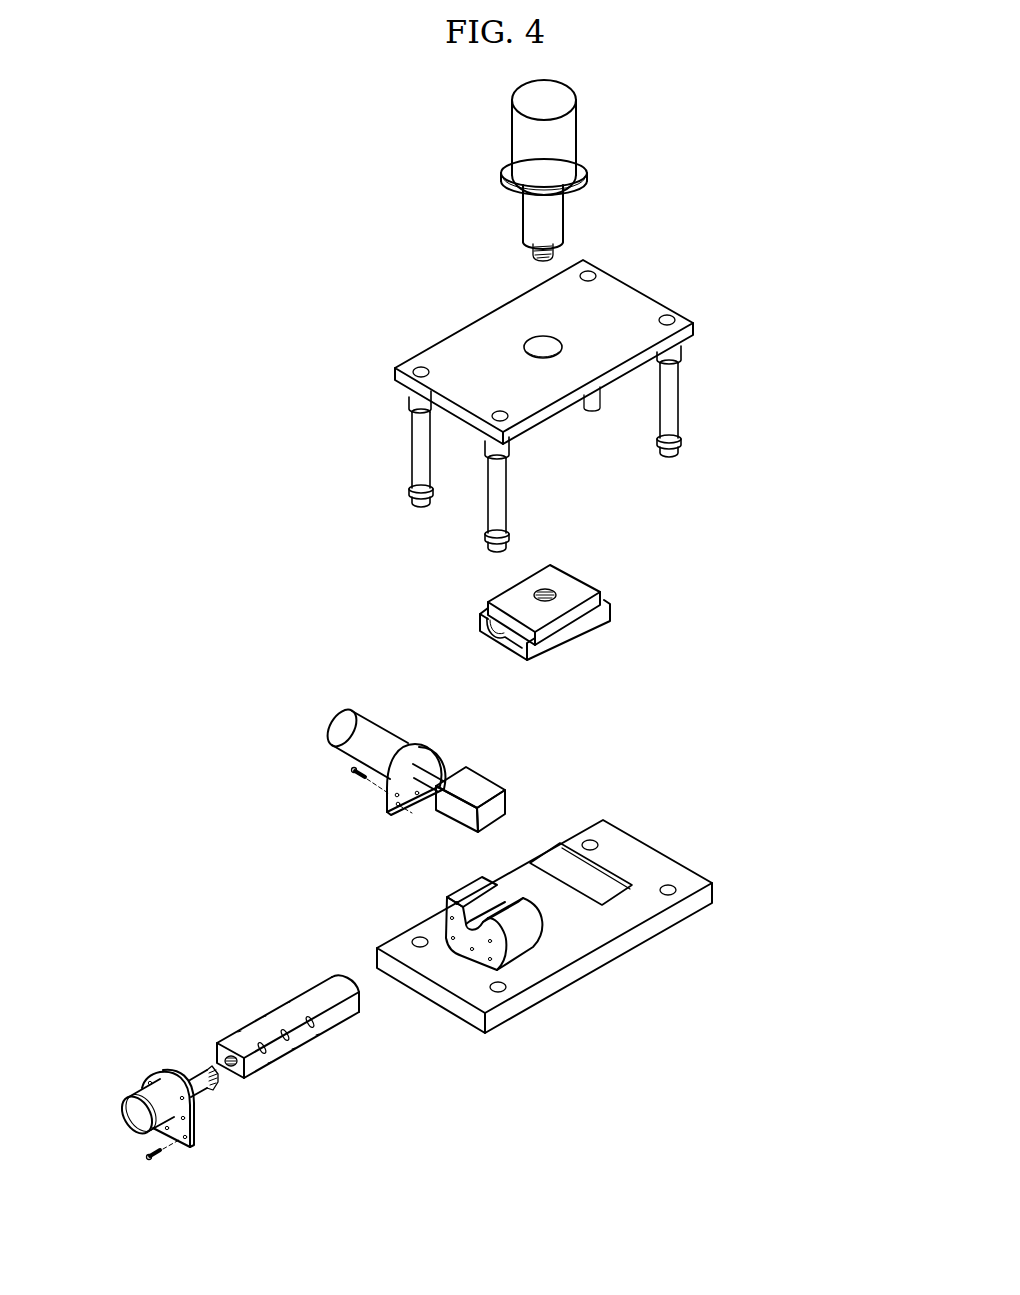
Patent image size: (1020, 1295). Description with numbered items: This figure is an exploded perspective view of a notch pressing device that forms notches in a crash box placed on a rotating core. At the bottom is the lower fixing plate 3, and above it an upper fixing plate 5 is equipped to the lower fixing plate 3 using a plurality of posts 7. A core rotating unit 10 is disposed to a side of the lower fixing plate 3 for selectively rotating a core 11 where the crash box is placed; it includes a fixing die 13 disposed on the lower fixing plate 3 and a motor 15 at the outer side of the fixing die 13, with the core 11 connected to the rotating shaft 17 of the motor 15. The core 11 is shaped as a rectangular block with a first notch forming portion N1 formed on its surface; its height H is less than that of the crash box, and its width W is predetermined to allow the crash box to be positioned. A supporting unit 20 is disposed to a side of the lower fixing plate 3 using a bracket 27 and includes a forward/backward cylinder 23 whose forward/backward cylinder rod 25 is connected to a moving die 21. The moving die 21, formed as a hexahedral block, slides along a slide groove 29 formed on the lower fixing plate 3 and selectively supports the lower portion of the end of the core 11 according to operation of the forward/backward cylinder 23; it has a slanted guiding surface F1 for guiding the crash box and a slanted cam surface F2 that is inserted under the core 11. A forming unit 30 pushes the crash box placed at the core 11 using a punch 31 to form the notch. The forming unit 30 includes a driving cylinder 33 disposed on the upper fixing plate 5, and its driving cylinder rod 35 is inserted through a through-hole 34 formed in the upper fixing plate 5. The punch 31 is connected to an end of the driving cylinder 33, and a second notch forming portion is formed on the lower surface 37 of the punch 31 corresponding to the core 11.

The lower fixing plate 3 is at (544, 925).
The upper fixing plate 5 is at (559, 404).
The posts 7 is at (672, 403).
The core rotating unit 10 is at (246, 1056).
The core 11 is at (301, 1061).
The fixing die 13 is at (513, 950).
The motor 15 is at (145, 1094).
The rotating shaft 17 is at (187, 1077).
The supporting unit 20 is at (408, 783).
The moving die 21 is at (473, 780).
The forward/backward cylinder 23 is at (375, 733).
The forward/backward cylinder rod 25 is at (428, 767).
The bracket 27 is at (387, 792).
The slide groove 29 is at (614, 870).
The forming unit 30 is at (629, 170).
The punch 31 is at (573, 639).
The driving cylinder 33 is at (570, 132).
The through-hole 34 is at (537, 340).
The driving cylinder rod 35 is at (555, 222).
The lower surface 37 is at (500, 650).
The guiding surface F1 is at (456, 834).
The cam surface F2 is at (495, 792).
The first notch forming portion N1 is at (273, 1069).
The width W is at (333, 1007).
The height H is at (368, 955).